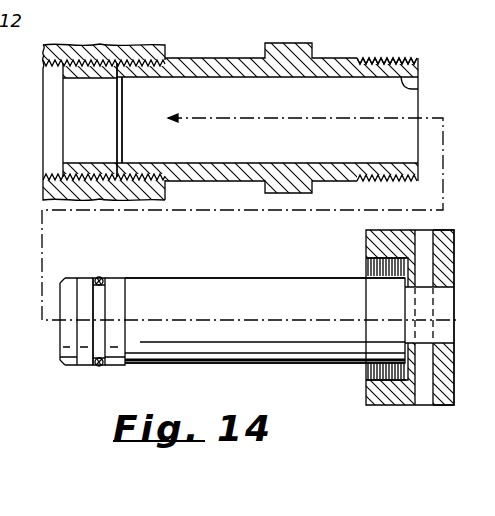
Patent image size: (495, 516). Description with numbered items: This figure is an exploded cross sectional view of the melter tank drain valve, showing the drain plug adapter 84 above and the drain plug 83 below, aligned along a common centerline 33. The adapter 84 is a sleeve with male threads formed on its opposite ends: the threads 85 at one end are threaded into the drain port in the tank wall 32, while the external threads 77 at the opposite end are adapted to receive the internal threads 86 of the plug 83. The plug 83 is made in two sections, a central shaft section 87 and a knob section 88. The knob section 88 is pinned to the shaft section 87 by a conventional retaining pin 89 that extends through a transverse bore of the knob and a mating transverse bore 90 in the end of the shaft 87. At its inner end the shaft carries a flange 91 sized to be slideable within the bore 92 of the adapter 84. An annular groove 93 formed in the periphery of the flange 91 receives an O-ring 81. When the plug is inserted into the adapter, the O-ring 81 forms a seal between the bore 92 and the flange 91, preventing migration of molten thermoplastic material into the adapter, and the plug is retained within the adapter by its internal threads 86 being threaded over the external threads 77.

The fitting body 32 is at (52, 76).
The axis / alignment centerline 33 is at (230, 217).
The external threads 77 is at (398, 58).
The O-ring 81 is at (117, 258).
The drain plug 83 is at (275, 298).
The drain plug adapter 84 is at (329, 51).
The threads 85 is at (123, 80).
The internal threads 86 is at (367, 369).
The central shaft section 87 is at (265, 320).
The knob section 88 is at (377, 406).
The retaining pin 89 is at (427, 392).
The transverse bore 90 is at (405, 322).
The flange 91 is at (120, 308).
The bore 92 is at (421, 89).
The annular groove 93 is at (100, 302).